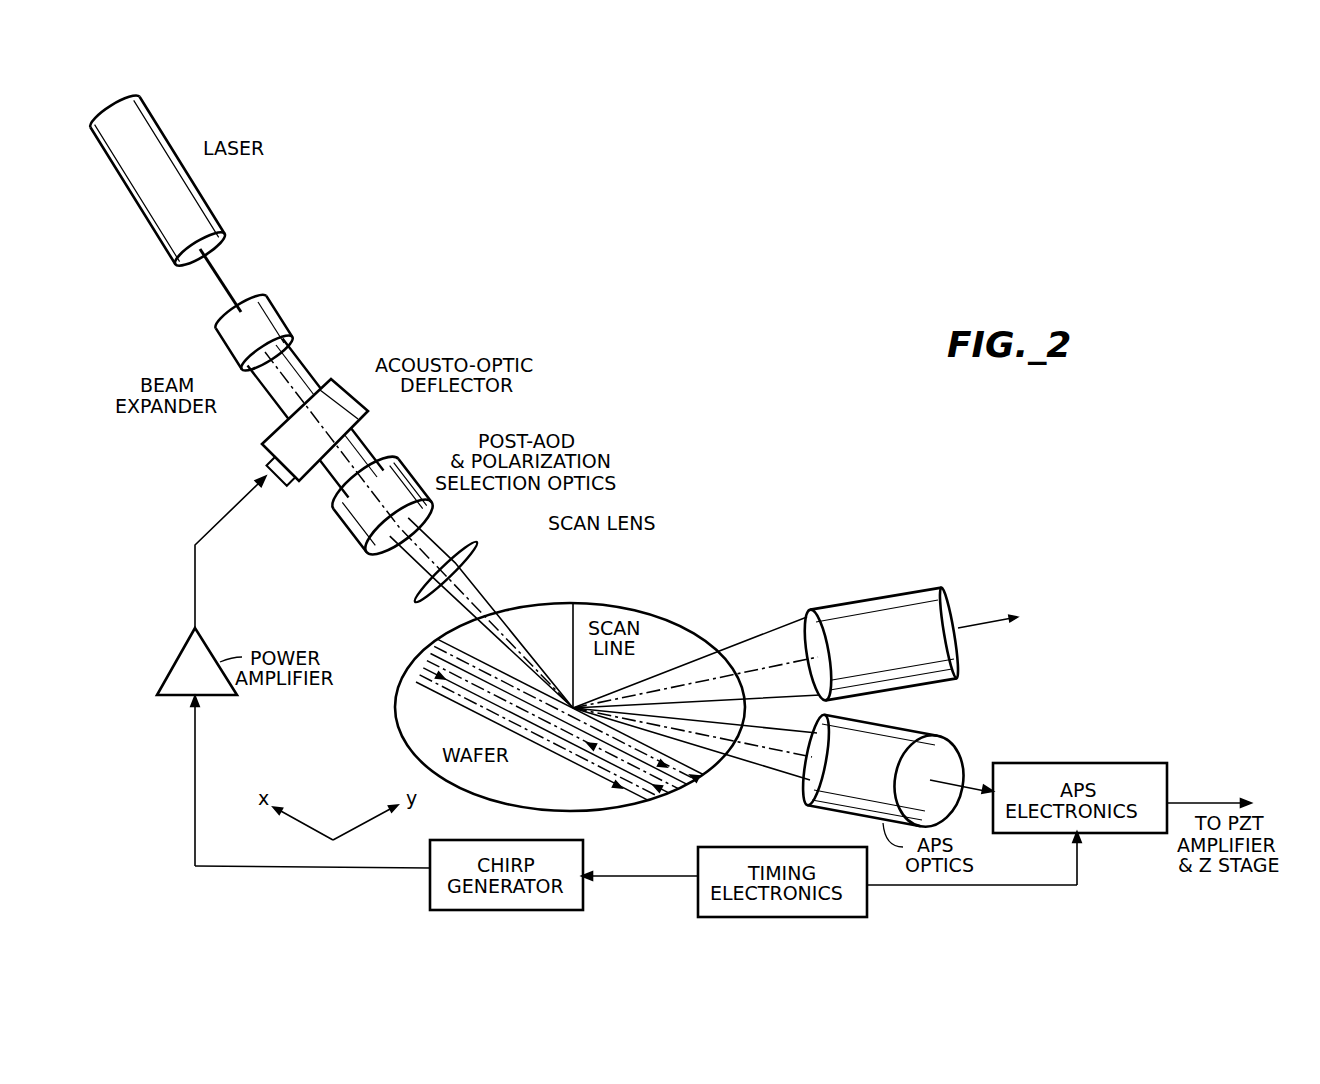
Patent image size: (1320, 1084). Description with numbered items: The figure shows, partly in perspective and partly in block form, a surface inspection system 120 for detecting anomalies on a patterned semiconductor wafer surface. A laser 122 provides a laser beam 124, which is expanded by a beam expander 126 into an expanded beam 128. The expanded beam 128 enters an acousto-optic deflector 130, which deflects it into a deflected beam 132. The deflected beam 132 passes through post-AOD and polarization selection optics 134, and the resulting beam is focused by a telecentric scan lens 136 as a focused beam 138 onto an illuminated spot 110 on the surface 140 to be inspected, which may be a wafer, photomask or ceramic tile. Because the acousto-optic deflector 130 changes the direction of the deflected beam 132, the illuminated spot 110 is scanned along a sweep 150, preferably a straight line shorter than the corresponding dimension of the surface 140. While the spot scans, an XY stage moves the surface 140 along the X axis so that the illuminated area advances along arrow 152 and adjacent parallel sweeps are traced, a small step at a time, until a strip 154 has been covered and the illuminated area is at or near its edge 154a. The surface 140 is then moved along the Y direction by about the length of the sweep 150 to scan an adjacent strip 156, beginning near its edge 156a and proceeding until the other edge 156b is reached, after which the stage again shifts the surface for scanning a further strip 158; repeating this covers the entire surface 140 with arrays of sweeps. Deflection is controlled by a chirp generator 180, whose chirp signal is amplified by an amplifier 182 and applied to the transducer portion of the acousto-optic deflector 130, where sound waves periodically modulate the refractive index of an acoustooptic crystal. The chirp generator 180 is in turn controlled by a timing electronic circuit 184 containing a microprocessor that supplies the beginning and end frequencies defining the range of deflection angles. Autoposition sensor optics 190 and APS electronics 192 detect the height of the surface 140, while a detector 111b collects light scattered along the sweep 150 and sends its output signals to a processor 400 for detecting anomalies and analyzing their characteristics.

The illuminated spot 110 is at (575, 600).
The detector 111b is at (872, 595).
The surface inspection system 120 is at (748, 237).
The laser 122 is at (166, 133).
The laser beam 124 is at (218, 272).
The beam expander 126 is at (228, 345).
The expanded beam 128 is at (267, 405).
The acousto-optic deflector 130 is at (338, 390).
The deflected beam 132 is at (330, 483).
The post-AOD and polarization selection optics 134 is at (412, 475).
The telecentric scan lens 136 is at (470, 548).
The focused beam 138 is at (487, 585).
The surface 140 is at (543, 695).
The sweep 150 is at (557, 740).
The arrow 152 is at (698, 768).
The strip 154 is at (690, 786).
The edge 154a is at (698, 798).
The adjacent strip 156 is at (665, 800).
The edge 156a is at (687, 807).
The edge 156b is at (436, 646).
The strip 158 is at (398, 703).
The chirp generator 180 is at (508, 840).
The amplifier 182 is at (205, 640).
The timing electronic circuit 184 is at (770, 847).
The autoposition sensor optics 190 is at (910, 727).
The APS electronics 192 is at (1080, 763).
The processor 400 is at (1088, 621).